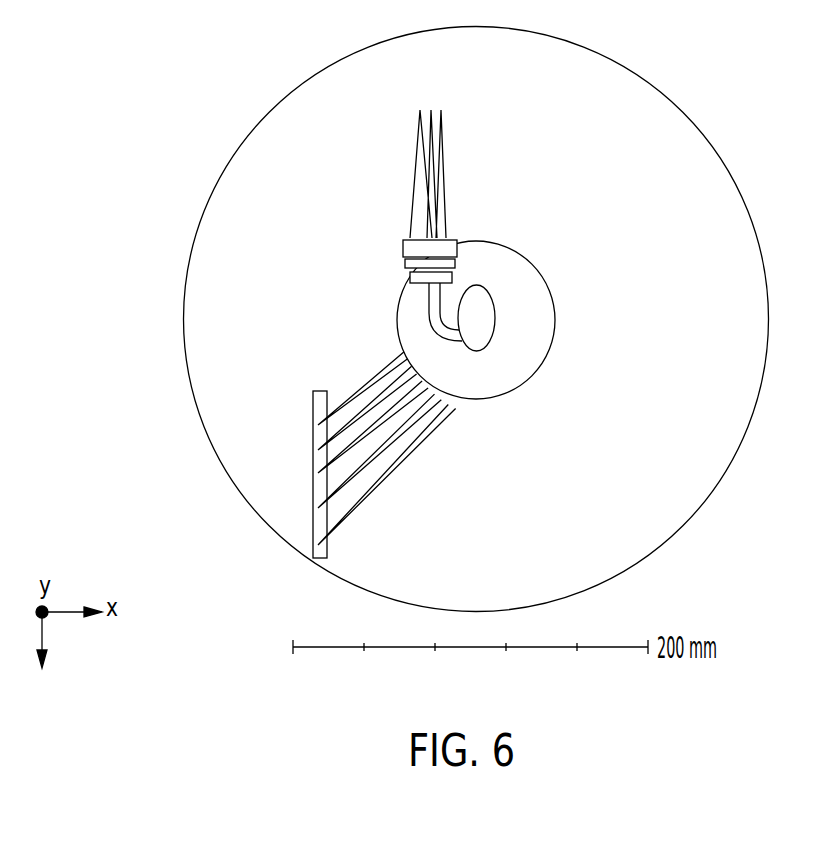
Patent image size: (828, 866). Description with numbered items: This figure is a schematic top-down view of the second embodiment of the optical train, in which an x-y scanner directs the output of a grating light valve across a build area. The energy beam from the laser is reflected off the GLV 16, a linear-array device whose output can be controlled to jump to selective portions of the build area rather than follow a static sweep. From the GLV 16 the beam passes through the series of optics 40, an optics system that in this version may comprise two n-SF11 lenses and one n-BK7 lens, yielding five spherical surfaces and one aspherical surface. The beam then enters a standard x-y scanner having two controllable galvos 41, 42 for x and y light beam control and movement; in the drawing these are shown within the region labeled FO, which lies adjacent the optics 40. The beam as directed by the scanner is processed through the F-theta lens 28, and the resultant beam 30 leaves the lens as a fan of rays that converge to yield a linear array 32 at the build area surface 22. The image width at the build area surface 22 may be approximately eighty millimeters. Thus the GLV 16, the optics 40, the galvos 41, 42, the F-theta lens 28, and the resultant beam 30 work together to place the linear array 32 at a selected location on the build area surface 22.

The GLV 16 is at (443, 207).
The build area surface 22 is at (657, 525).
The F-theta lens 28 is at (709, 253).
The resultant beam 30 is at (418, 440).
The linear array 32 is at (313, 457).
The optics system 40 is at (395, 240).
The galvo 41 is at (432, 313).
The galvo 42 is at (481, 323).
The field of view FO is at (545, 290).